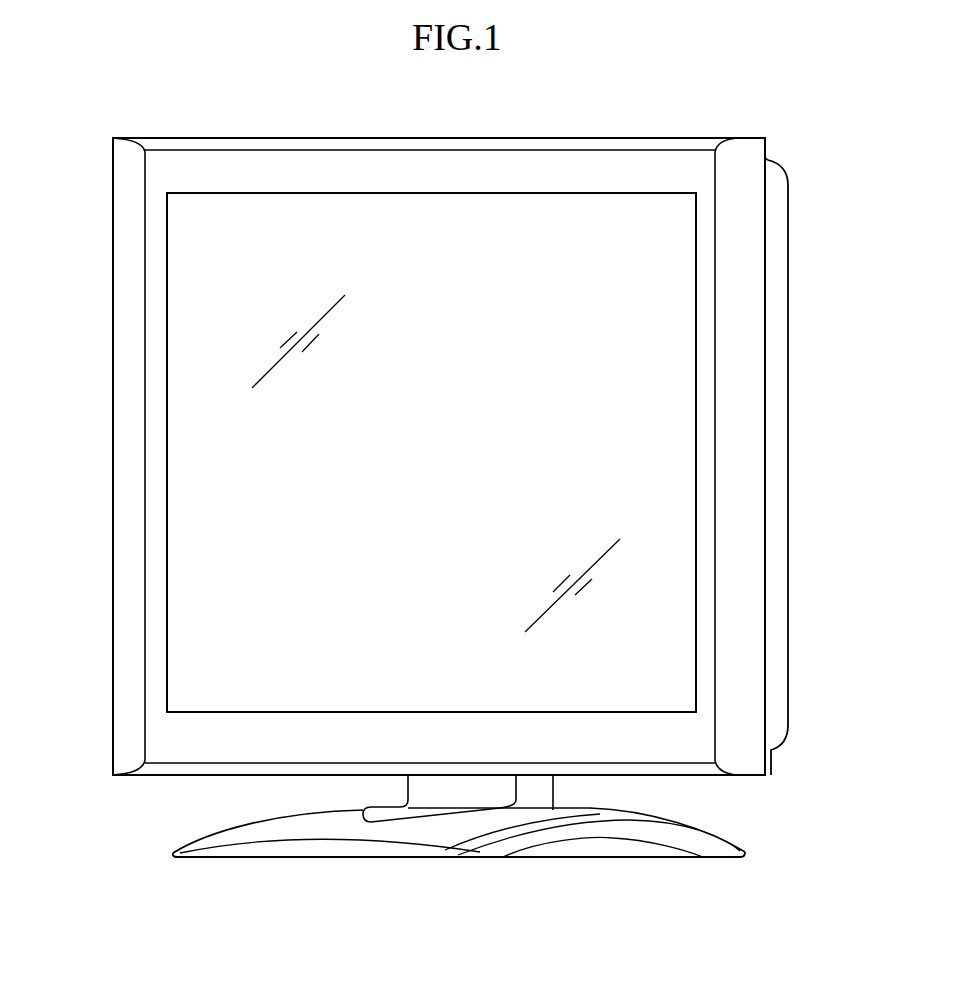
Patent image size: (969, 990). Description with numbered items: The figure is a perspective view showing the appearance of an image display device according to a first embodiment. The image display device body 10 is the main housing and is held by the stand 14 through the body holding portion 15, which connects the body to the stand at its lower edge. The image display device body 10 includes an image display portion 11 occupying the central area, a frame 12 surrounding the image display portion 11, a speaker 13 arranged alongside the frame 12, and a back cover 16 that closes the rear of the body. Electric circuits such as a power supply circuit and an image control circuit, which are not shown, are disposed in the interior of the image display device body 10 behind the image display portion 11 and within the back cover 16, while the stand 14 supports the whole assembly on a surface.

The image display device body 10 is at (443, 452).
The image display portion 11 is at (390, 233).
The frame 12 is at (550, 166).
The speaker 13 is at (130, 601).
The stand 14 is at (465, 831).
The body holding portion 15 is at (534, 793).
The back cover 16 is at (787, 180).